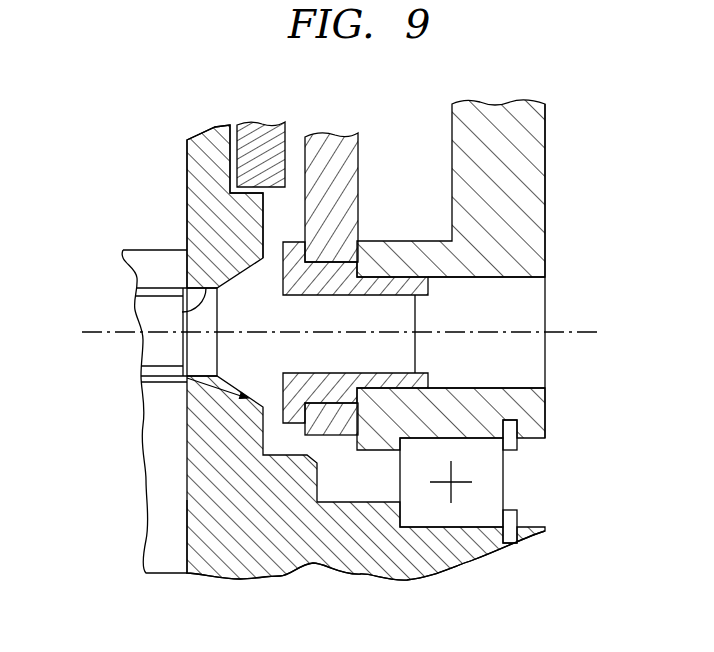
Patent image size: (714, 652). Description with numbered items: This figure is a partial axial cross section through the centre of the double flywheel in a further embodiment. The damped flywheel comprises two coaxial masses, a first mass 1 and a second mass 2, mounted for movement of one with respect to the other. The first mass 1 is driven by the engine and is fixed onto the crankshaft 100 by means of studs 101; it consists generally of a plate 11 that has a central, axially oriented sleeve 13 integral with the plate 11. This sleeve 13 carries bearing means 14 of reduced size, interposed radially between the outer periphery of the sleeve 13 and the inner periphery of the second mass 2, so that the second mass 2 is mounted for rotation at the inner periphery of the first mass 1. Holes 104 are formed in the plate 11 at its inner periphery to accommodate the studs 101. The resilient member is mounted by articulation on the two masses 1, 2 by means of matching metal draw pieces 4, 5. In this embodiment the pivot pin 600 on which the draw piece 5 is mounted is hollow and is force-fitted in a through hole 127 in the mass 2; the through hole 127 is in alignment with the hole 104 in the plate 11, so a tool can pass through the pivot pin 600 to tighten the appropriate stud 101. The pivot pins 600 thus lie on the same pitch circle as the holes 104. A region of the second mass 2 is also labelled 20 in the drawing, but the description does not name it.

The first mass 1 is at (181, 476).
The second mass 2 is at (547, 118).
The draw piece 4 is at (266, 130).
The draw piece 5 is at (340, 158).
The plate 11 is at (188, 150).
The sleeve 13 is at (243, 562).
The bearing means 14 is at (493, 486).
The housing wall 20 is at (518, 210).
The crankshaft 100 is at (143, 248).
The studs 101 is at (198, 352).
The holes 104 is at (182, 313).
The through hole 127 is at (498, 277).
The pivot pin 600 is at (377, 377).